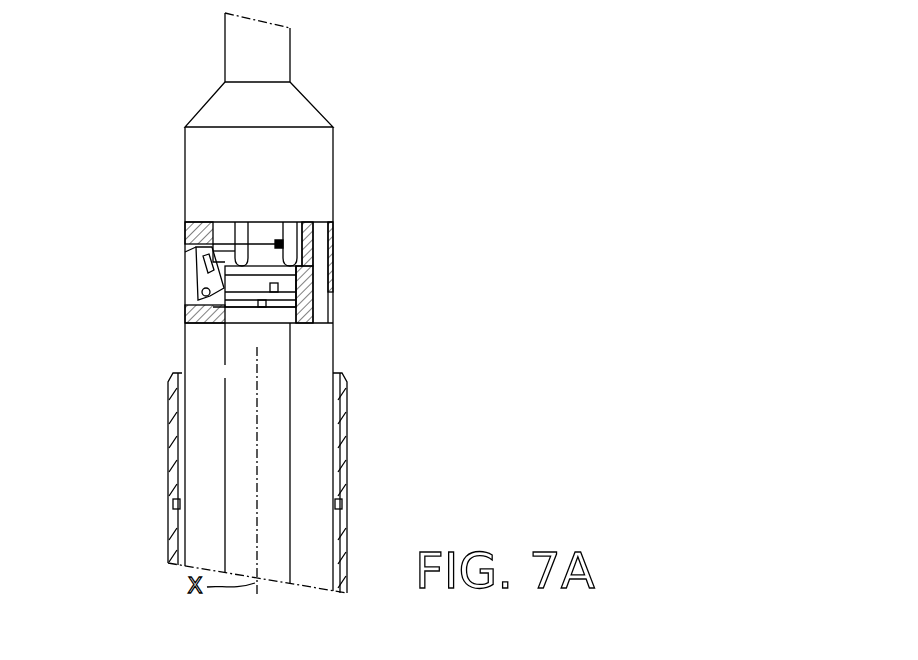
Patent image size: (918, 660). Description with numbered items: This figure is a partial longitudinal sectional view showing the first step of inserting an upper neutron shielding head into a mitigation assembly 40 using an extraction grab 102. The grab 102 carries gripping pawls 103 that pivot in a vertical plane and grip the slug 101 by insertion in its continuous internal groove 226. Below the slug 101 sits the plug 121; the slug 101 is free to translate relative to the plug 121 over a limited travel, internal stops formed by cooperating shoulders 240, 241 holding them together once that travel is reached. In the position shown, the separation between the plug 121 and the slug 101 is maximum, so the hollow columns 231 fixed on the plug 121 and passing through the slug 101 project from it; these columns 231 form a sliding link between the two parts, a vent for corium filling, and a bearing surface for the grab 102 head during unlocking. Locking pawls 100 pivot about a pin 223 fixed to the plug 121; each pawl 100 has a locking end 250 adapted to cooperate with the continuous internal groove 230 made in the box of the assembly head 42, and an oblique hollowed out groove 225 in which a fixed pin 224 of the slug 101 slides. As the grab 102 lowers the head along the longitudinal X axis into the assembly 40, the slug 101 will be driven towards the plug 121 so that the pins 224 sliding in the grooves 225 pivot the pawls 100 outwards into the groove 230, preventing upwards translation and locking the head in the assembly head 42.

The extraction grab 102 is at (346, 147).
The gripping pawls 103 is at (240, 221).
The hollowed out groove 225 is at (186, 232).
The continuous internal groove 226 is at (258, 250).
The hollow columns 231 is at (333, 248).
The slug 101 is at (322, 246).
The shoulder 241 is at (310, 264).
The plug 121 is at (327, 294).
The locking end 250 is at (190, 252).
The fixed pins 224 is at (197, 270).
The locking pawls 100 is at (196, 288).
The pin 223 is at (192, 305).
The shoulder 240 is at (184, 318).
The assembly head 42 is at (345, 428).
The mitigation assembly 40 is at (441, 458).
The continuous internal groove 230 is at (176, 504).